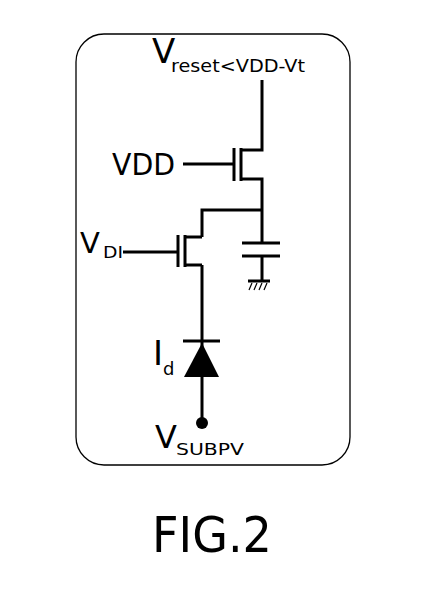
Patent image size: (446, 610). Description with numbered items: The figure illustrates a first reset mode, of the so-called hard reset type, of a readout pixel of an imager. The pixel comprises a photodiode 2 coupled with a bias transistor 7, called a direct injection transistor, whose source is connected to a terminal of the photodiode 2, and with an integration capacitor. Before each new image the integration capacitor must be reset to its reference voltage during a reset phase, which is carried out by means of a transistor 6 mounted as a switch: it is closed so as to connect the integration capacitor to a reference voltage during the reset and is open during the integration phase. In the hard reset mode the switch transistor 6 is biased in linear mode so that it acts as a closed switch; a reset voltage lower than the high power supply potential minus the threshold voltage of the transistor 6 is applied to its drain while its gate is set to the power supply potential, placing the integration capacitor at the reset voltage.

The photodiode 2 is at (231, 363).
The transistor 6 is at (272, 170).
The bias transistor 7 is at (156, 231).